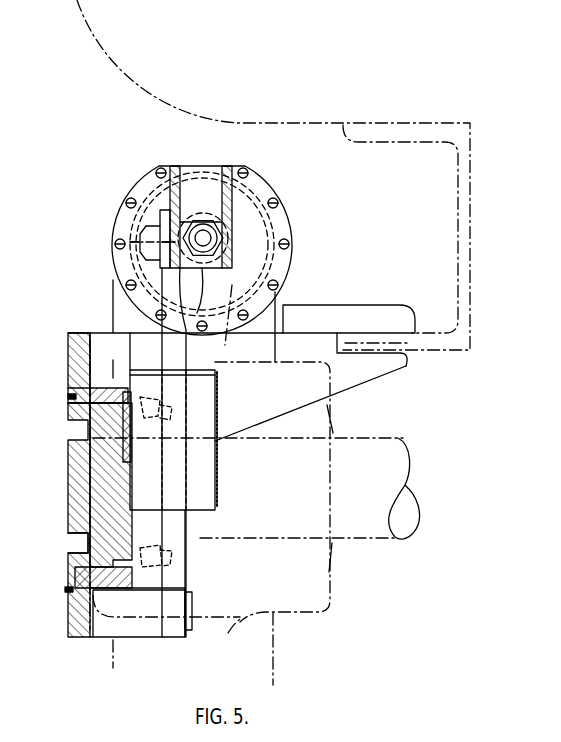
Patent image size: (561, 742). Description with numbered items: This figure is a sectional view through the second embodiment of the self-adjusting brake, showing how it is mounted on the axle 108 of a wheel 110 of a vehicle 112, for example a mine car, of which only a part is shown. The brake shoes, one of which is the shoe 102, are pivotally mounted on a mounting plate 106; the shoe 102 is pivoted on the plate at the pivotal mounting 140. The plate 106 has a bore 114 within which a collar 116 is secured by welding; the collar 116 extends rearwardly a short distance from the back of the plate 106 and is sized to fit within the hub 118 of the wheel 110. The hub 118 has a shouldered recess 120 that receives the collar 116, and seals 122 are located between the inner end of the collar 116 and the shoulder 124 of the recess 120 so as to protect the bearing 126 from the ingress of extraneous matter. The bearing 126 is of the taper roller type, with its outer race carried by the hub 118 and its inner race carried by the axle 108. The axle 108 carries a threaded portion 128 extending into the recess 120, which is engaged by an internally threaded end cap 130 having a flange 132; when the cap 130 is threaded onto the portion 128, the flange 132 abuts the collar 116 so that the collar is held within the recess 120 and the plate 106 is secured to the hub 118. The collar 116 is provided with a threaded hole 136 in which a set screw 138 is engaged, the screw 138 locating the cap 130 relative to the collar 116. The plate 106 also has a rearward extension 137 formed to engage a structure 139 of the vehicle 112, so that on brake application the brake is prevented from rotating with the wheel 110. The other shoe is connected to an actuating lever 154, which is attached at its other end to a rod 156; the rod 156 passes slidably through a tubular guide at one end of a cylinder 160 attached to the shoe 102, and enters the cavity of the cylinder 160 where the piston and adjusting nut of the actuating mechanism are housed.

The shoe 102 is at (252, 362).
The mounting plate 106 is at (75, 620).
The axle 108 is at (348, 452).
The wheel 110 is at (338, 402).
The vehicle 112 is at (256, 92).
The bore 114 is at (72, 398).
The collar 116 is at (78, 570).
The hub 118 is at (110, 358).
The shouldered recess 120 is at (108, 372).
The seals 122 is at (113, 378).
The shoulder 124 is at (131, 392).
The bearing 126 is at (152, 415).
The threaded portion 128 is at (213, 471).
The end cap 130 is at (83, 450).
The flange 132 is at (75, 578).
The threaded hole 136 is at (72, 392).
The rearward extension 137 is at (403, 373).
The set screw 138 is at (72, 407).
The structure 139 is at (447, 330).
The pivotal mounting 140 is at (183, 637).
The actuating lever 154 is at (228, 166).
The rod 156 is at (210, 236).
The cylinder 160 is at (260, 173).